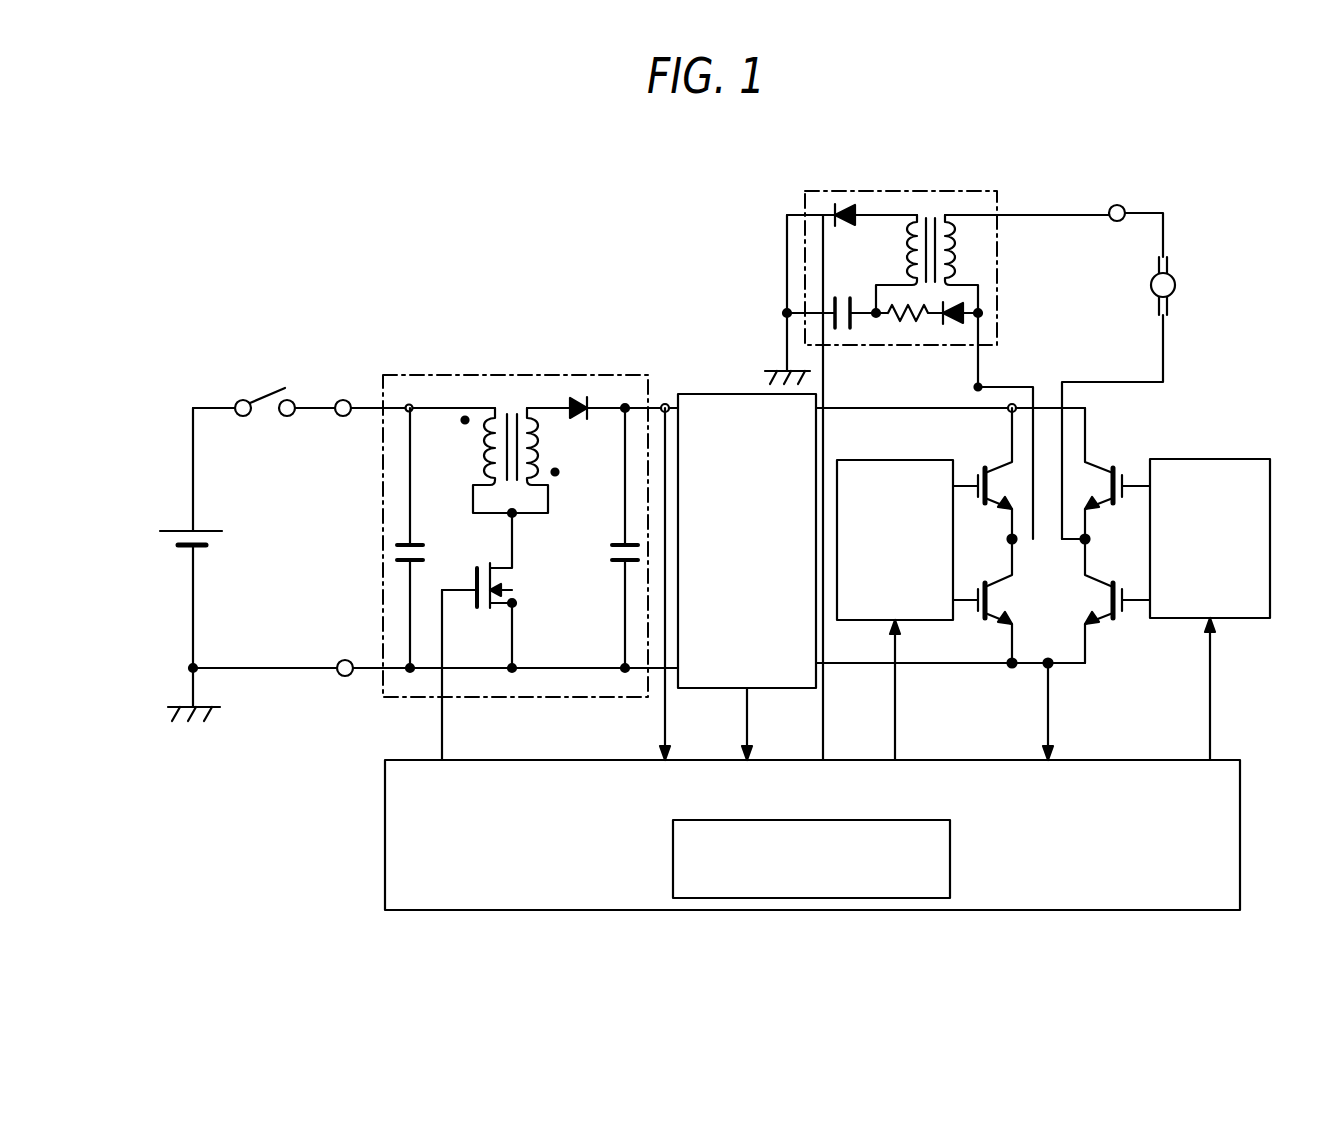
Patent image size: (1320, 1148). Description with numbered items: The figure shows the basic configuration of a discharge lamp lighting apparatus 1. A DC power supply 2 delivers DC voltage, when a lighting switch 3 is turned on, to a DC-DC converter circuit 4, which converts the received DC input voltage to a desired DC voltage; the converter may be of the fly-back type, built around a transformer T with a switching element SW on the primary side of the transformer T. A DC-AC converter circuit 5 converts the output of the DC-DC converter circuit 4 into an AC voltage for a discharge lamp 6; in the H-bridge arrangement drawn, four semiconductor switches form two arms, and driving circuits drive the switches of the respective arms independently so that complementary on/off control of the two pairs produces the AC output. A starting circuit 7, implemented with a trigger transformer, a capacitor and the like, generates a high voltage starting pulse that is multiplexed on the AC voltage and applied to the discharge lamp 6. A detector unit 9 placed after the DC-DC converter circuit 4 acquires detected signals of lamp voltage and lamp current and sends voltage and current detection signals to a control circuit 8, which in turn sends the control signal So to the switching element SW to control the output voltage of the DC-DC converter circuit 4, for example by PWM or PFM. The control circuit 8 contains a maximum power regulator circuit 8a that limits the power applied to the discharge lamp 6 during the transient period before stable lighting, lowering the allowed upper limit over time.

The discharge lamp lighting apparatus 1 is at (468, 270).
The DC power supply 2 is at (178, 531).
The lighting switch 3 is at (266, 386).
The DC-DC converter circuit 4 is at (580, 376).
The DC-AC converter circuit 5 is at (1128, 441).
The discharge lamp 6 is at (1176, 283).
The starting circuit 7 is at (943, 188).
The control circuit 8 is at (782, 863).
The maximum power regulator circuit 8a is at (813, 898).
The detector unit 9 is at (749, 392).
The transformer T is at (562, 488).
The switching element SW is at (499, 592).